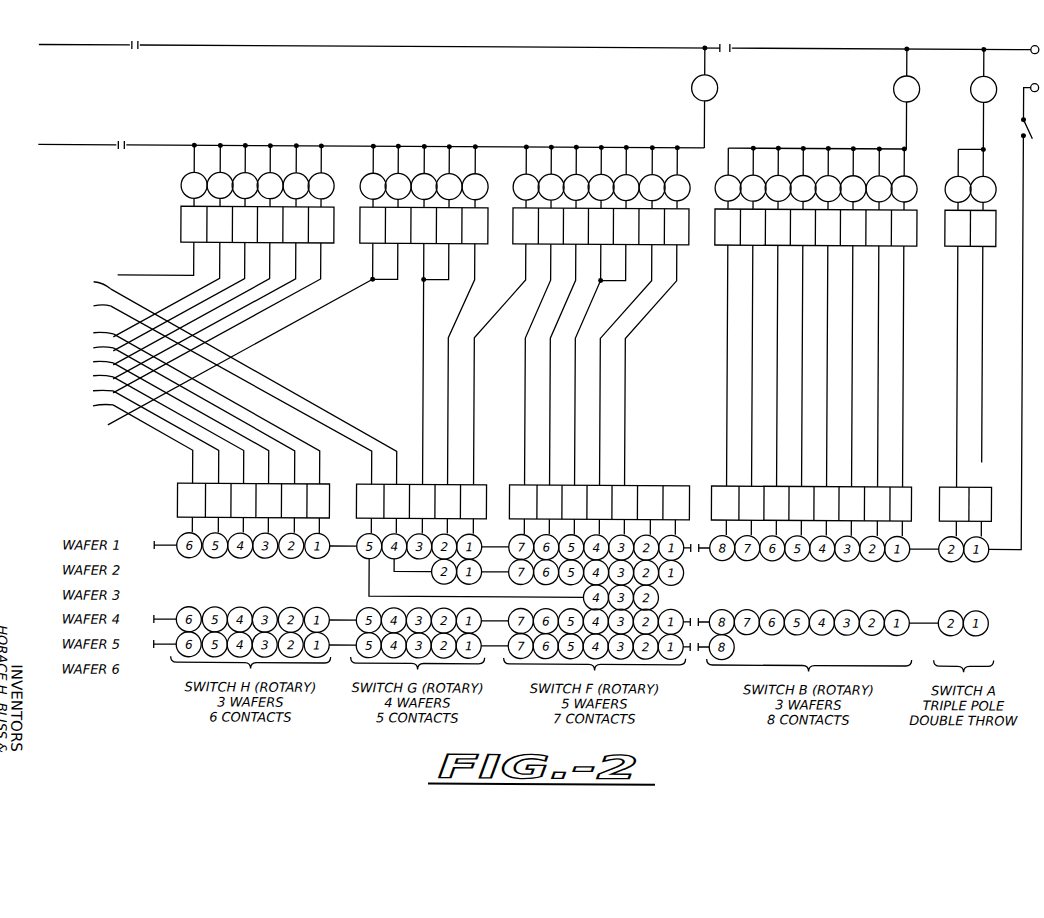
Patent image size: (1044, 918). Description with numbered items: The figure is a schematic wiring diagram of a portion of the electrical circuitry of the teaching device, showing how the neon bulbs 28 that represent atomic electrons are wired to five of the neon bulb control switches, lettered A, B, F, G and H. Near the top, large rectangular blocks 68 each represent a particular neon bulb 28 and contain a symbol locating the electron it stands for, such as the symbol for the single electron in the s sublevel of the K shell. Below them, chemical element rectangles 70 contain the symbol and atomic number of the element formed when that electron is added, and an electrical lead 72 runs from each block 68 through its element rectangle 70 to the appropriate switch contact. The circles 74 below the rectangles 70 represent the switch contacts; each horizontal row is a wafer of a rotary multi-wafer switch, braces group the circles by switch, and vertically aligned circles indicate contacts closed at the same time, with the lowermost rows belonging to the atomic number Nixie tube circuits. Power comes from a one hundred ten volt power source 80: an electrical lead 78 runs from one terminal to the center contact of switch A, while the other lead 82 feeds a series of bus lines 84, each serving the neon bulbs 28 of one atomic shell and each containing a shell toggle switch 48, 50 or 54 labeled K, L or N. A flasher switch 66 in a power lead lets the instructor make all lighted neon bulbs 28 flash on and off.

The neon bulb 28 is at (588, 177).
The shell toggle switch 48 is at (974, 96).
The shell toggle switch 50 is at (895, 96).
The shell toggle switch 54 is at (690, 94).
The neon bulb flasher switch 66 is at (1010, 127).
The rectangular block 68 is at (180, 226).
The chemical element rectangle 70 is at (178, 498).
The electrical lead 72 is at (304, 321).
The contact circle 74 is at (190, 560).
The electrical lead 78 is at (1022, 293).
The 110 volt power source 80 is at (1024, 47).
The lead 82 is at (806, 47).
The bus line 84 is at (700, 127).